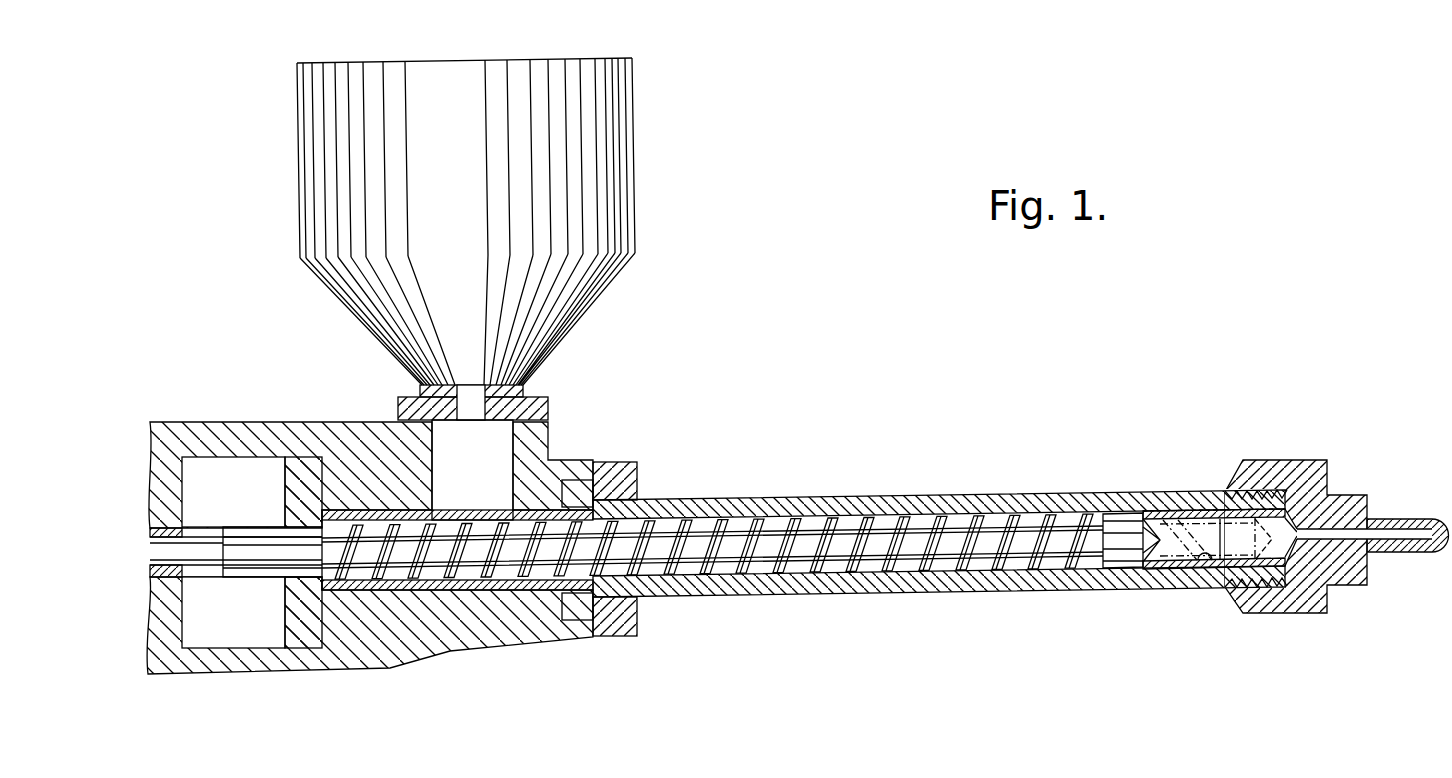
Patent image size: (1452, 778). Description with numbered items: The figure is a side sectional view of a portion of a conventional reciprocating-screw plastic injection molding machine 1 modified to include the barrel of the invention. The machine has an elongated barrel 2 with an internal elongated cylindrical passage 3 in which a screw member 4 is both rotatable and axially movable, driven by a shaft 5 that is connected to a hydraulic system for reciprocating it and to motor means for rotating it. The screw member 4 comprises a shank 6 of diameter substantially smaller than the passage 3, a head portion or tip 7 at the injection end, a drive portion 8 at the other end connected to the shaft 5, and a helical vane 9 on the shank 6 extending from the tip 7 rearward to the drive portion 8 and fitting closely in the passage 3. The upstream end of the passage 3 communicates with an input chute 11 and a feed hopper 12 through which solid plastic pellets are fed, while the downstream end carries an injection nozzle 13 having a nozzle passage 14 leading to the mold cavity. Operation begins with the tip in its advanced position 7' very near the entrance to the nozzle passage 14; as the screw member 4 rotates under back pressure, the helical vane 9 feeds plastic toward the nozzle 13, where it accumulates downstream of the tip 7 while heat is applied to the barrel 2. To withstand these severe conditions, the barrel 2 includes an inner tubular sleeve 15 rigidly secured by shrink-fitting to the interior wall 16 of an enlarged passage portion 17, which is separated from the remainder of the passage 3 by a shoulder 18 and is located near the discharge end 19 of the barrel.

The plastic injection molding machine 1 is at (678, 410).
The barrel 2 is at (771, 493).
The passage 3 is at (686, 516).
The screw member 4 is at (712, 546).
The shaft 5 is at (192, 550).
The shank 6 is at (787, 547).
The tip 7 is at (1113, 584).
The tip in advanced position 7' is at (1271, 595).
The drive portion 8 is at (270, 553).
The helical vane 9 is at (899, 516).
The input chute 11 is at (495, 478).
The feed hopper 12 is at (636, 202).
The injection nozzle 13 is at (1336, 586).
The nozzle passage 14 is at (1383, 533).
The inner tubular sleeve 15 is at (1157, 560).
The interior wall 16 is at (1153, 508).
The enlarged passage portion 17 is at (1213, 560).
The shoulder 18 is at (1127, 510).
The discharge end 19 is at (1200, 505).